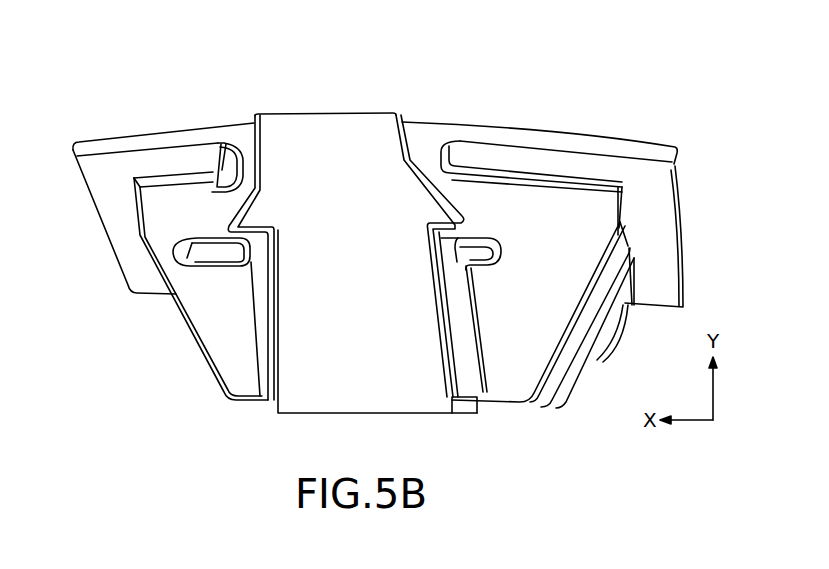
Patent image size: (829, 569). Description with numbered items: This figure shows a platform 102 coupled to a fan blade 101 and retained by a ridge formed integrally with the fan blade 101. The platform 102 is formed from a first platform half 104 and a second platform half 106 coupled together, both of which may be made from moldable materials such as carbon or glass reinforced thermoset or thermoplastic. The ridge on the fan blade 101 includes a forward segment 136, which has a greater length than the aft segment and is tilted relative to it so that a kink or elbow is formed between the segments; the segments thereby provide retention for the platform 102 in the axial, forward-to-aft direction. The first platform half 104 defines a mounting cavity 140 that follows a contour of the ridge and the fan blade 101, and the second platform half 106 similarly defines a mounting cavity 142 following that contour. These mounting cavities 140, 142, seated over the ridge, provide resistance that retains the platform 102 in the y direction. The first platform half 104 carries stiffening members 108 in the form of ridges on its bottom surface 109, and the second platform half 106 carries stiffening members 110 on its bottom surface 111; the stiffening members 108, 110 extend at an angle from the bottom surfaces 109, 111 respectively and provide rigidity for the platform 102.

The fan blade 101 is at (349, 213).
The platform 102 is at (230, 125).
The first platform half 104 is at (91, 137).
The second platform half 106 is at (610, 140).
The stiffening members 108 is at (217, 357).
The bottom surface 109 is at (100, 175).
The stiffening members 110 is at (515, 373).
The bottom surface 111 is at (647, 202).
The forward segment 136 is at (258, 213).
The mounting cavity 140 is at (213, 235).
The mounting cavity 142 is at (450, 238).